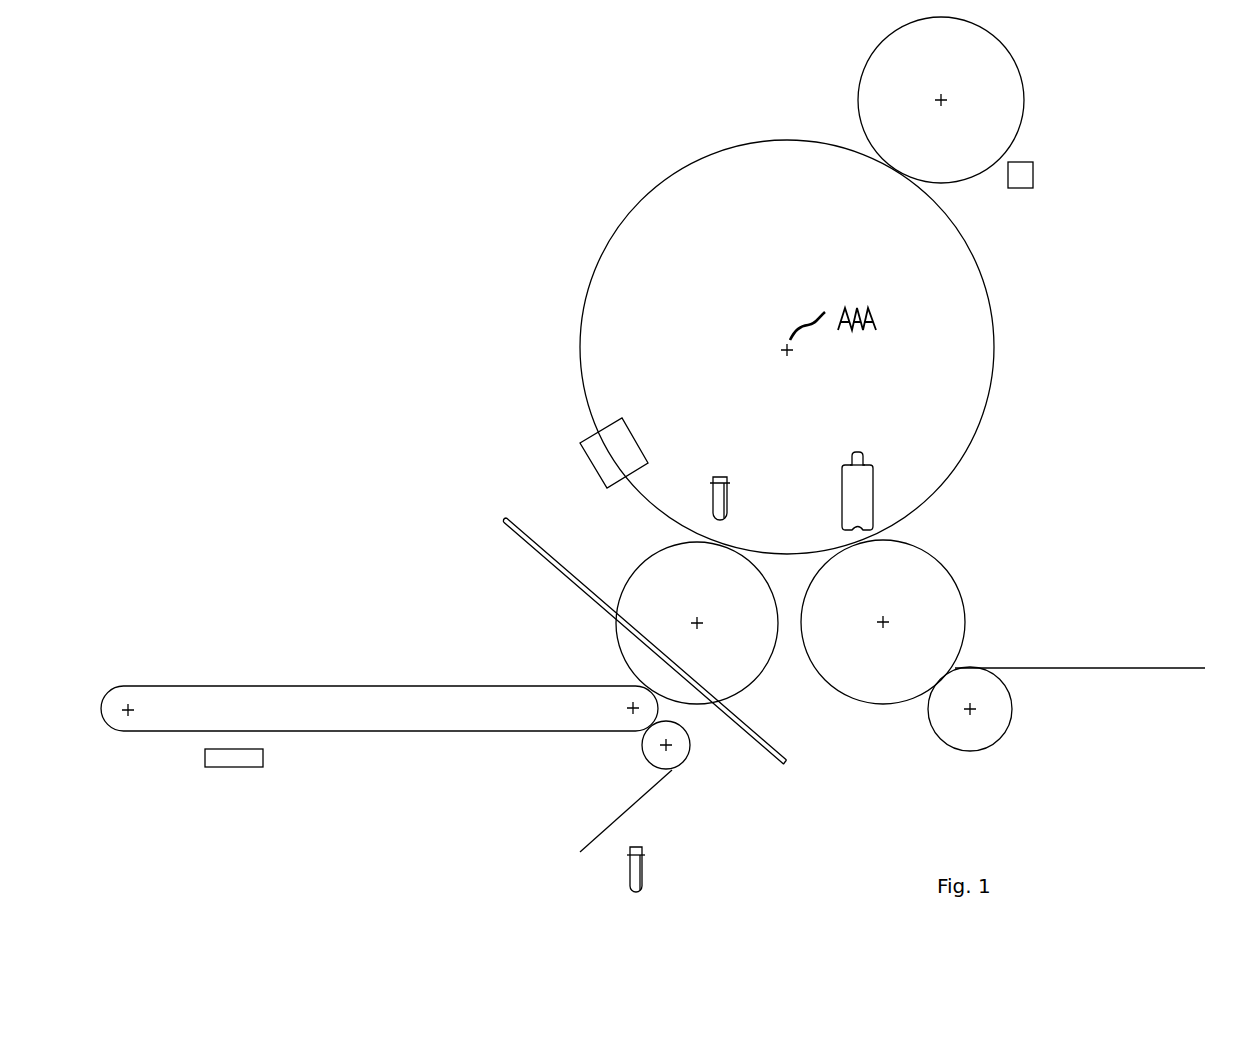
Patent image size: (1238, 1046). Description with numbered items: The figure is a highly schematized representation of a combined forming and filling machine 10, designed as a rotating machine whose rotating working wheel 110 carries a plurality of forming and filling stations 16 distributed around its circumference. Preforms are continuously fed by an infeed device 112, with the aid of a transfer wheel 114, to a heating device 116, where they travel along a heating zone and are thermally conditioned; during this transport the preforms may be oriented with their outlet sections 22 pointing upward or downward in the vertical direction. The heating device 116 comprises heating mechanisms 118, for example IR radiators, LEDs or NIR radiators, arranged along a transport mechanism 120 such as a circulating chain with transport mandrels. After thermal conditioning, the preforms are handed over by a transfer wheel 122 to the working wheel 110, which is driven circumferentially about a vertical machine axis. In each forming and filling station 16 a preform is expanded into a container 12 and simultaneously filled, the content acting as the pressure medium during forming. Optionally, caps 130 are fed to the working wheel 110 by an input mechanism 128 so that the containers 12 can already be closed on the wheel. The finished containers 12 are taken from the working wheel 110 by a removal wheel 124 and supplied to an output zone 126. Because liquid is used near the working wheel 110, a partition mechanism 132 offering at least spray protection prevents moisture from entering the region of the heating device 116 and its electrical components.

The forming and filling machine 10 is at (530, 127).
The working wheel 110 is at (993, 370).
The input mechanism 128 is at (858, 97).
The caps 130 is at (1036, 172).
The forming and filling station 16 is at (582, 455).
The container 12 is at (875, 488).
The transfer wheel 122 is at (616, 665).
The removal wheel 124 is at (963, 613).
The output zone 126 is at (1127, 668).
The partition mechanism 132 is at (528, 558).
The heating device 116 is at (293, 614).
The transport mechanism 120 is at (364, 686).
The heating mechanism 118 is at (226, 768).
The transfer wheel 114 is at (690, 742).
The infeed device 112 is at (597, 830).
The outlet section 22 is at (638, 845).